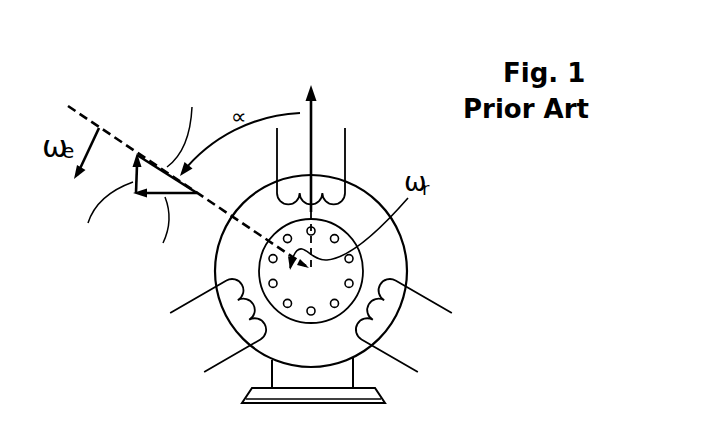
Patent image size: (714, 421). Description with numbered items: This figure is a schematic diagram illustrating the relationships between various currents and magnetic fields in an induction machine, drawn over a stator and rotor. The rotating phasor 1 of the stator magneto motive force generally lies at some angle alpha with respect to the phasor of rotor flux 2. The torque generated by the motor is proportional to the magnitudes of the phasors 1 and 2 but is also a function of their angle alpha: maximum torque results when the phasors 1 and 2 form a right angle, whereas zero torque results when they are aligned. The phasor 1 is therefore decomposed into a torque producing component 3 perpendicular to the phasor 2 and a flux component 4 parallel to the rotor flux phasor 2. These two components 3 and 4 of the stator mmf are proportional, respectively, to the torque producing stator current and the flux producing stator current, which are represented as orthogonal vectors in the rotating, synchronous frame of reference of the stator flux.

The rotating phasor of the stator magneto motive force 1 is at (147, 160).
The phasor of rotor flux 2 is at (311, 127).
The torque producing component 3 is at (187, 195).
The flux component 4 is at (132, 197).